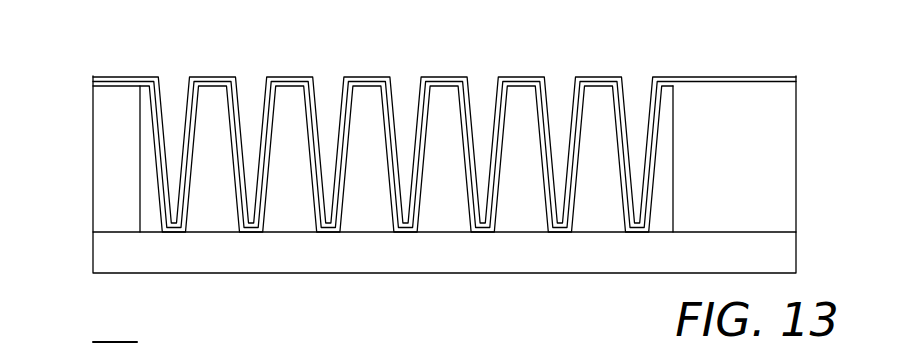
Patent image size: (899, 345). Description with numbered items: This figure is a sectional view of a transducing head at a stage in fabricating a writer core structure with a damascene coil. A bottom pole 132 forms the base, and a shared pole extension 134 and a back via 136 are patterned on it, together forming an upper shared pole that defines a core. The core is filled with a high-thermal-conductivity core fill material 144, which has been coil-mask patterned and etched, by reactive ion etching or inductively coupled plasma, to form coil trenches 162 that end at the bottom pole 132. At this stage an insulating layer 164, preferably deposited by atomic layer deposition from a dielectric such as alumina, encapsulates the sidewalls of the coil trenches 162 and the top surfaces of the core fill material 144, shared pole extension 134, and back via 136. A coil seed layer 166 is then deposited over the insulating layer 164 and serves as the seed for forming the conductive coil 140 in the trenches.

The bottom pole 132 is at (105, 257).
The shared pole extension 134 is at (752, 172).
The back via 136 is at (105, 207).
The conductive coil 140 is at (160, 331).
The core fill material 144 is at (211, 105).
The coil trenches 162 is at (262, 72).
The insulating layer 164 is at (462, 97).
The coil seed layer 166 is at (449, 78).